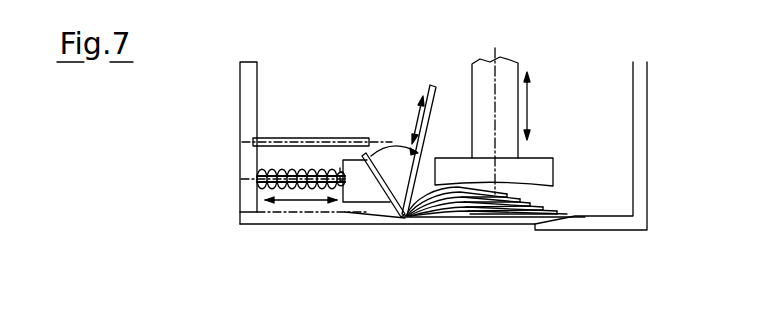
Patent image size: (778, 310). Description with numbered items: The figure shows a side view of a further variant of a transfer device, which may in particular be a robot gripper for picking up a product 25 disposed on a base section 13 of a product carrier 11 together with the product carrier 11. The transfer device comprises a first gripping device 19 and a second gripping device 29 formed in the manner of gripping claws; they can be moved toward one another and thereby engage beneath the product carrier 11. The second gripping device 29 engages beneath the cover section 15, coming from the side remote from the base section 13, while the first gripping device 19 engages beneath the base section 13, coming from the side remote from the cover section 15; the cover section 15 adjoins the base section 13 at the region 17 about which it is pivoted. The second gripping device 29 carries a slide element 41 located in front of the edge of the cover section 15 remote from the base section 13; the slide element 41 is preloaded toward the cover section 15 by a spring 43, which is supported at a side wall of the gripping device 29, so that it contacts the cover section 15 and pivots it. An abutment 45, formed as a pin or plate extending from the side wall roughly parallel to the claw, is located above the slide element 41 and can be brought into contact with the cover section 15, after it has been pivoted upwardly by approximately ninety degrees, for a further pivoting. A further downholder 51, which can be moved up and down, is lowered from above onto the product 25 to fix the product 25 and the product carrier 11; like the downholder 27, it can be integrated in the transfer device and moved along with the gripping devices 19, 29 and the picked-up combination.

The product carrier 11 is at (421, 218).
The base section 13 is at (482, 219).
The cover section 15 is at (367, 150).
The base / fold line 17 is at (402, 218).
The first gripping device 19 is at (648, 172).
The product 25 is at (555, 201).
The downholder 27 is at (433, 86).
The second gripping device 29 is at (240, 142).
The slide element 41 is at (358, 193).
The spring 43 is at (256, 226).
The abutment 45 is at (299, 138).
The further downholder 51 is at (520, 150).